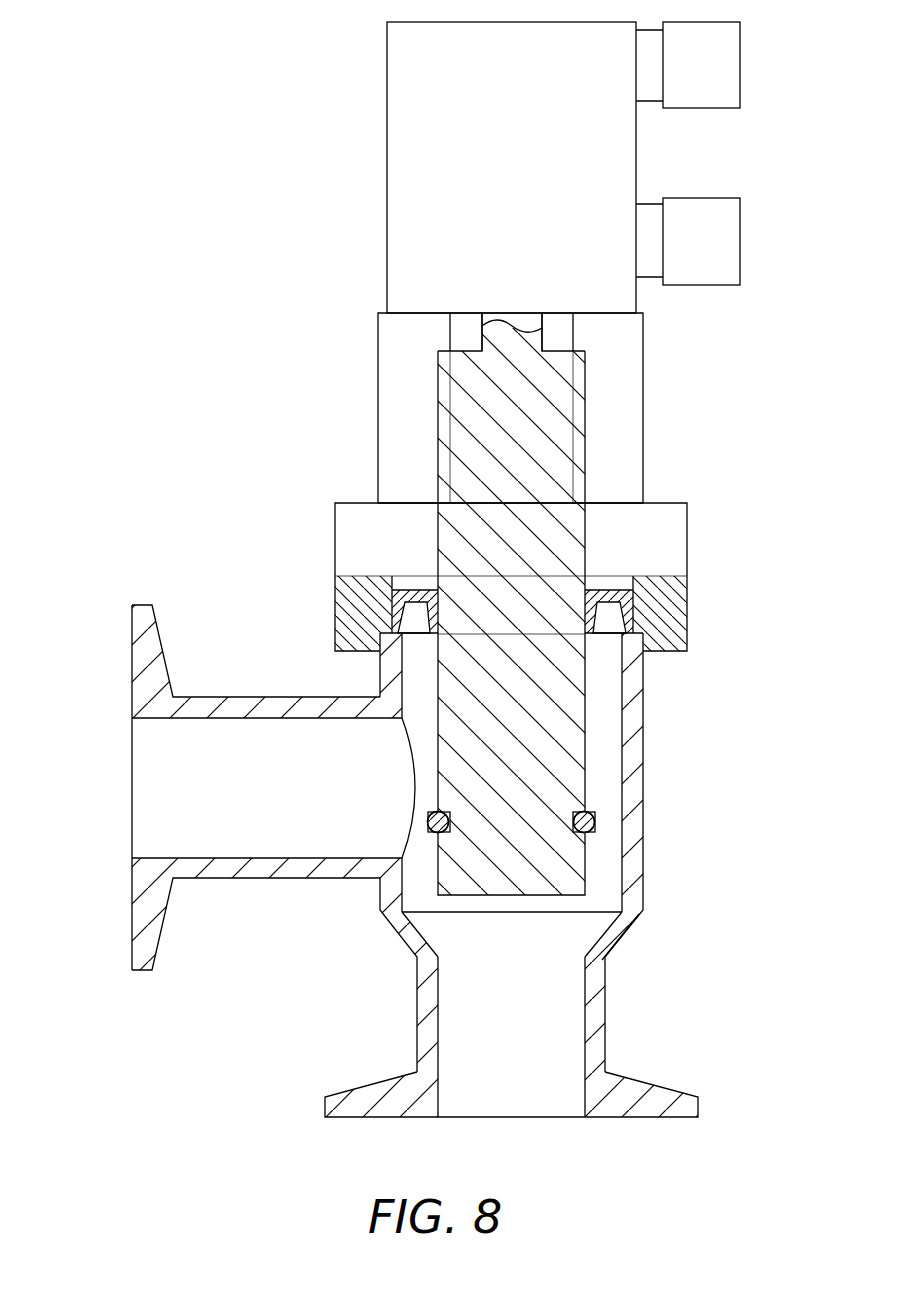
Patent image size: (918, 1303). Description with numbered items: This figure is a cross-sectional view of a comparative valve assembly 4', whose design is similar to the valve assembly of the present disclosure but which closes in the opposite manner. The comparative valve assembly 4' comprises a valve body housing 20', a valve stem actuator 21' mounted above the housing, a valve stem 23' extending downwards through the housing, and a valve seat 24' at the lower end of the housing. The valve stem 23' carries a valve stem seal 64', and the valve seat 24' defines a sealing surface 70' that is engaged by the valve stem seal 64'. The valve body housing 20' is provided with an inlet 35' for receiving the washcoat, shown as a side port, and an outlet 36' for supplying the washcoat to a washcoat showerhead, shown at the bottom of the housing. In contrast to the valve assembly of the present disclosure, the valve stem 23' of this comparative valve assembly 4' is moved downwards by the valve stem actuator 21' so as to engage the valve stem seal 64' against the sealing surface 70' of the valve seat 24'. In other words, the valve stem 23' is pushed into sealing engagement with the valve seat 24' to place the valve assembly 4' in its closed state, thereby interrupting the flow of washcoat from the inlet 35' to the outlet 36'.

The comparative valve assembly 4' is at (438, 599).
The valve stem actuator 21' is at (559, 262).
The valve stem 23' is at (577, 604).
The valve body housing 20' is at (525, 810).
The valve stem seal 64' is at (571, 821).
The sealing surface 70' is at (512, 957).
The valve seat 24' is at (649, 953).
The inlet 35' is at (230, 787).
The outlet 36' is at (511, 1124).